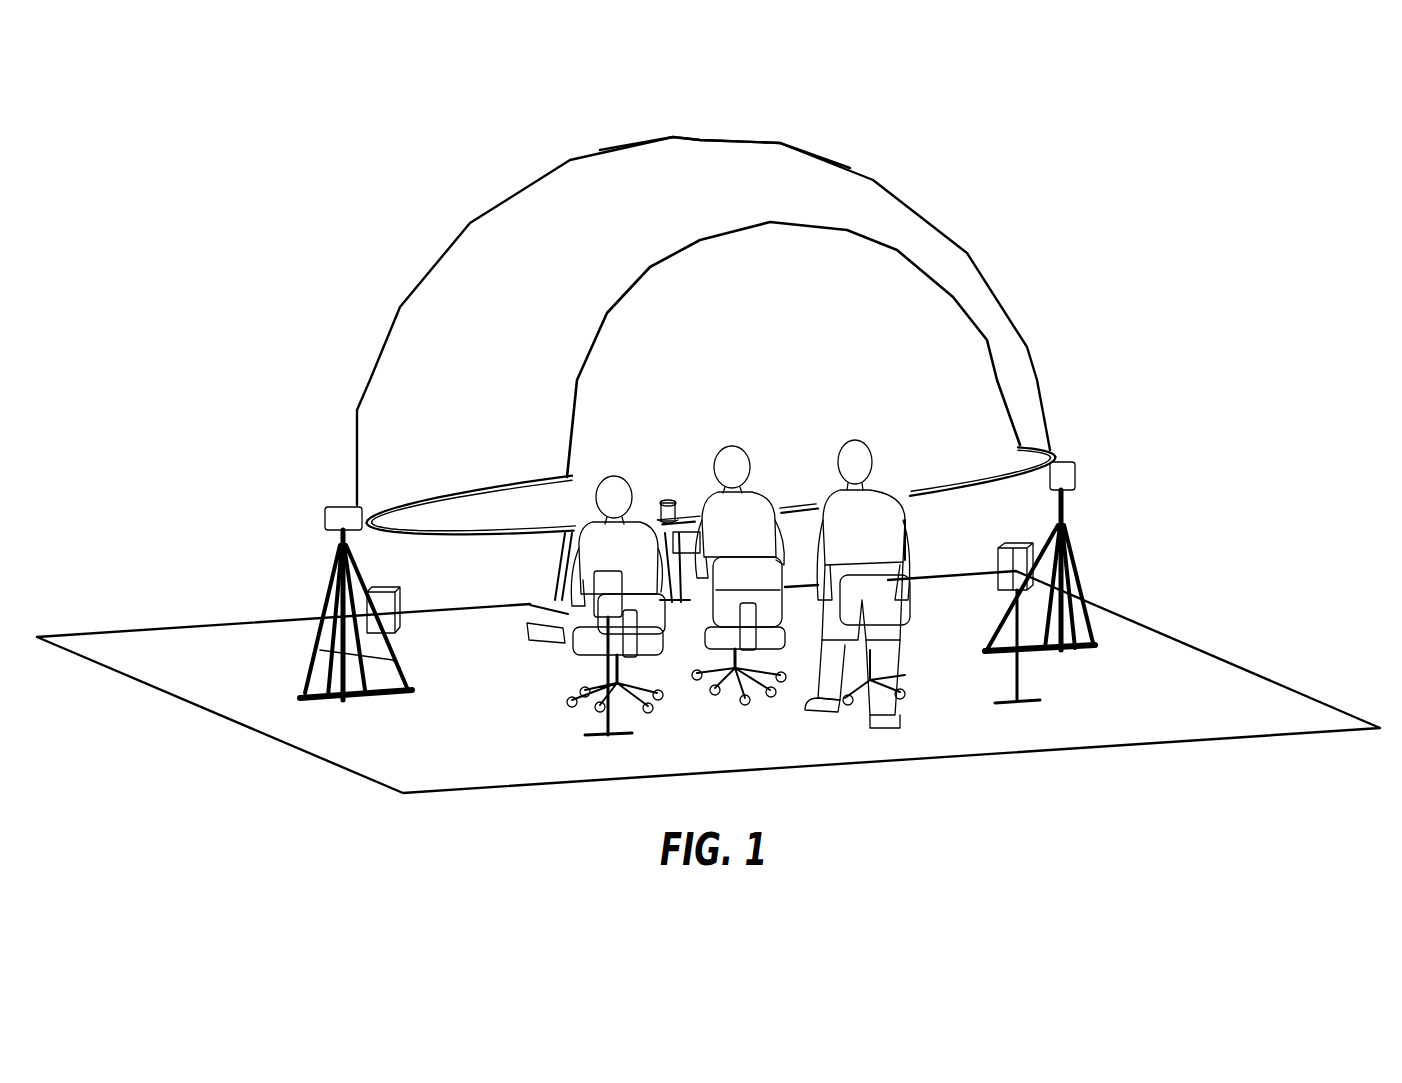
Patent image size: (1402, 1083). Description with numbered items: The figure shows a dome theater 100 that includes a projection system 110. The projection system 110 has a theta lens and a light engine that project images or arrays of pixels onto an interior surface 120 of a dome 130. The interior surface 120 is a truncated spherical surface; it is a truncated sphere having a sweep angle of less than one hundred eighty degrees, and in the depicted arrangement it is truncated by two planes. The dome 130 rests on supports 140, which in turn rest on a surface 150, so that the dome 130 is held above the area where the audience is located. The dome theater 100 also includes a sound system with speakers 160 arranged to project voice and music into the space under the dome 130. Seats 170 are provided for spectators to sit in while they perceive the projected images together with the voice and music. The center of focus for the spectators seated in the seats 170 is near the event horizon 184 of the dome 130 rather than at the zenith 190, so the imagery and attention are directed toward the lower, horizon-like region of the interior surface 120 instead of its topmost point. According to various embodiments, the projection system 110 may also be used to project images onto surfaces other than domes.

The dome theater 100 is at (1054, 132).
The projection system 110 is at (667, 500).
The interior surface 120 is at (745, 368).
The dome 130 is at (435, 268).
The supports 140 is at (336, 561).
The surface 150 is at (1199, 688).
The speakers 160 is at (401, 612).
The seats 170 is at (850, 702).
The event horizon 184 is at (425, 518).
The zenith 190 is at (722, 137).